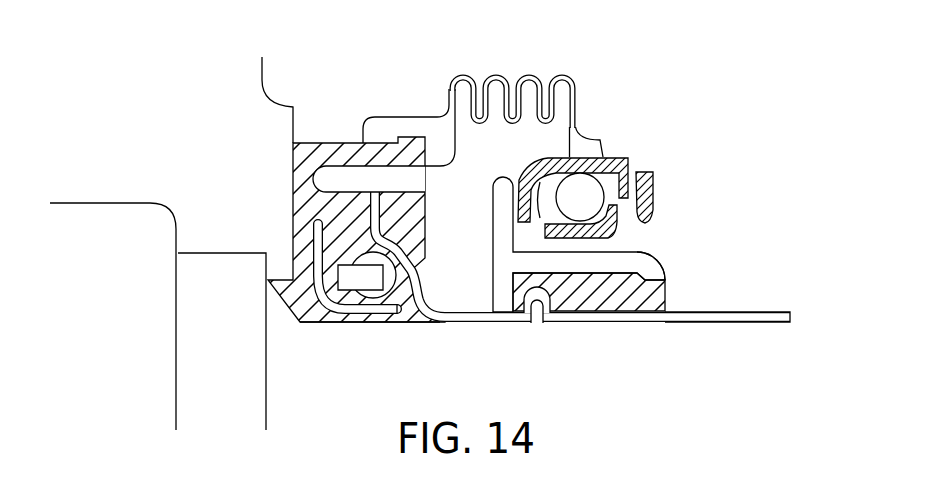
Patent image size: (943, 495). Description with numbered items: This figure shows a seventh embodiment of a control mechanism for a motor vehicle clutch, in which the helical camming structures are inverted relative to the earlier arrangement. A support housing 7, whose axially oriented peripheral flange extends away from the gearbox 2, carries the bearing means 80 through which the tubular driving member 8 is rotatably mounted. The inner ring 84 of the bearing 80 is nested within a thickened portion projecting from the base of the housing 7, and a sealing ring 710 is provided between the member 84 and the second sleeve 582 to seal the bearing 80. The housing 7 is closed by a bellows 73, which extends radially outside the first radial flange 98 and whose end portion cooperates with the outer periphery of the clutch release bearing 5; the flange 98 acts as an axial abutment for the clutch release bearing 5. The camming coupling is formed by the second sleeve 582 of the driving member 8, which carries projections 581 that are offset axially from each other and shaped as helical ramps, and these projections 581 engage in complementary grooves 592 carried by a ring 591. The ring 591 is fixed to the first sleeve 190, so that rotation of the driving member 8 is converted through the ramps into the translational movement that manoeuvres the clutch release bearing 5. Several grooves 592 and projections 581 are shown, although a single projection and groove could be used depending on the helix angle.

The gearbox 2 is at (106, 168).
The support housing 7 is at (347, 135).
The bellows 73 is at (530, 76).
The clutch release bearing 5 is at (626, 148).
The first radial flange 98 is at (490, 192).
The inner ring of the bearing 84 is at (316, 233).
The bearing means 80 is at (336, 323).
The sealing ring 710 is at (395, 325).
The tubular driving member 8 is at (473, 333).
The projections 581 is at (530, 313).
The grooves 592 is at (547, 313).
The second sleeve 582 is at (778, 310).
The ring 591 is at (668, 293).
The first sleeve 190 is at (657, 253).